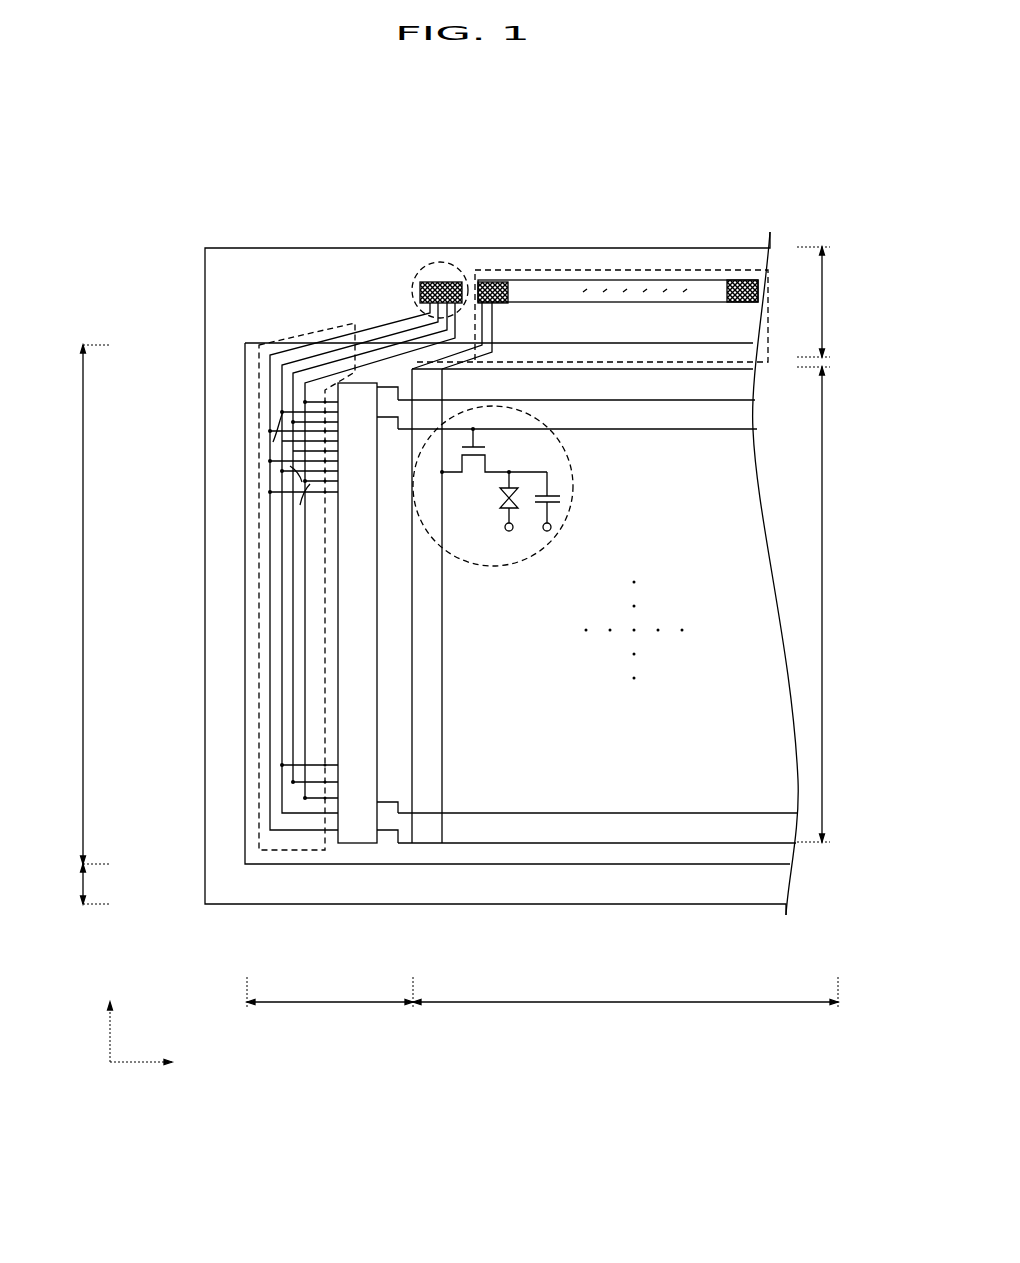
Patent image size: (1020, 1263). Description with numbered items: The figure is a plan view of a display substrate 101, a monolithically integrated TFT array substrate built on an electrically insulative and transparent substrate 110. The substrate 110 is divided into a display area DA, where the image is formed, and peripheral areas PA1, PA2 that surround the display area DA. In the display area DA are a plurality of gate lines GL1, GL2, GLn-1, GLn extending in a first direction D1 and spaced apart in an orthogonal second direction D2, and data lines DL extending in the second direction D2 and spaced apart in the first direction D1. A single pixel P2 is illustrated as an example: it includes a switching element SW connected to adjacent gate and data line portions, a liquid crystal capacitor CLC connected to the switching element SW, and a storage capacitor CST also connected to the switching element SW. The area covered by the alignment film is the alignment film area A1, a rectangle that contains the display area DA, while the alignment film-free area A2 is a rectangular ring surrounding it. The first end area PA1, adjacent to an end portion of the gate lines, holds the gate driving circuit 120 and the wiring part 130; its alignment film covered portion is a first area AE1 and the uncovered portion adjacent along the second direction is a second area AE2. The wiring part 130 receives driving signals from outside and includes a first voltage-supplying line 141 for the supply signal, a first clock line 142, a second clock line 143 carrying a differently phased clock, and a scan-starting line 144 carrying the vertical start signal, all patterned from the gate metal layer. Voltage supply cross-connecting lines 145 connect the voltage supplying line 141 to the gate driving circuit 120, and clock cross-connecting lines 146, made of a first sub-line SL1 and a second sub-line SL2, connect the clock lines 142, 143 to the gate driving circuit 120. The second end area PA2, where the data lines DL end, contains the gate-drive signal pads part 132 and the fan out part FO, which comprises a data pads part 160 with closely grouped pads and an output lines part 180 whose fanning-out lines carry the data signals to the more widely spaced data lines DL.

The display substrate 101 is at (495, 168).
The substrate 110 is at (246, 282).
The gate driving circuit 120 is at (355, 845).
The wiring part 130 is at (330, 327).
The gate-drive signal pads part 132 is at (440, 262).
The first voltage-supplying line 141 is at (270, 595).
The first clock line 142 is at (282, 623).
The second clock line 143 is at (293, 652).
The scan-starting line 144 is at (305, 680).
The voltage supply cross-connecting lines 145 is at (273, 442).
The clock cross-connecting lines 146 is at (202, 495).
The data pads part 160 is at (485, 282).
The output lines part 180 is at (495, 340).
The fan out part FO is at (690, 270).
The first end area PA1 is at (330, 1002).
The second end area PA2 is at (829, 544).
The display area DA is at (633, 697).
The first area AE1 is at (78, 624).
The second area AE2 is at (66, 884).
The first gate line GL1 is at (728, 400).
The second gate line GL2 is at (672, 430).
The (n-1)th gate line GLn-1 is at (724, 812).
The n-th gate line GLn is at (653, 841).
The data lines DL is at (413, 680).
The pixel P2 is at (527, 486).
The switching element SW is at (493, 450).
The liquid crystal capacitor CLC is at (491, 501).
The storage capacitor CST is at (553, 505).
The first sub-line SL1 is at (302, 482).
The second sub-line SL2 is at (300, 505).
The alignment film area A1 is at (550, 864).
The alignment film-free area A2 is at (617, 898).
The first direction D1 is at (156, 1063).
The second direction D2 is at (108, 1019).